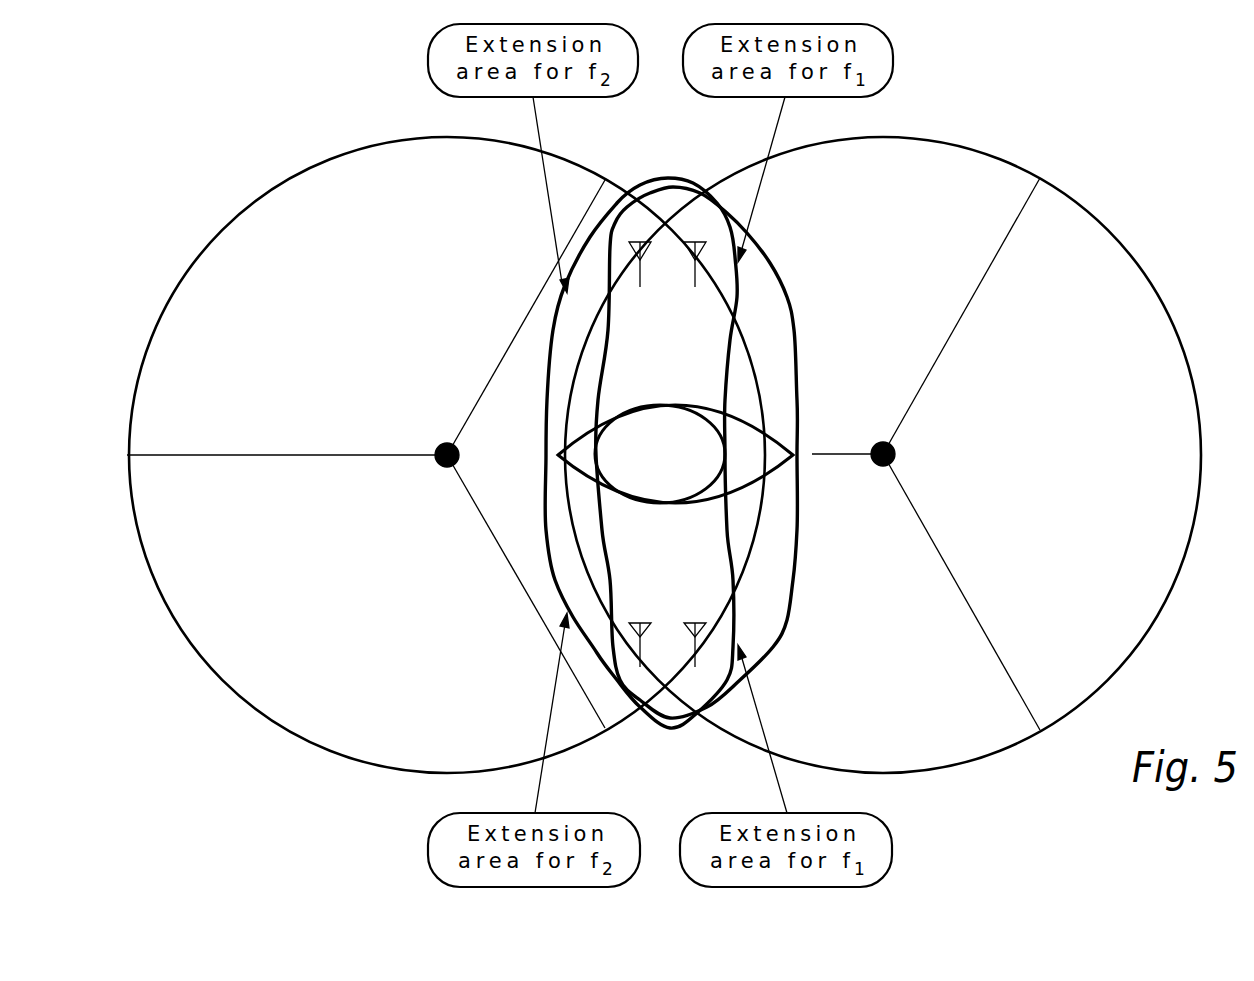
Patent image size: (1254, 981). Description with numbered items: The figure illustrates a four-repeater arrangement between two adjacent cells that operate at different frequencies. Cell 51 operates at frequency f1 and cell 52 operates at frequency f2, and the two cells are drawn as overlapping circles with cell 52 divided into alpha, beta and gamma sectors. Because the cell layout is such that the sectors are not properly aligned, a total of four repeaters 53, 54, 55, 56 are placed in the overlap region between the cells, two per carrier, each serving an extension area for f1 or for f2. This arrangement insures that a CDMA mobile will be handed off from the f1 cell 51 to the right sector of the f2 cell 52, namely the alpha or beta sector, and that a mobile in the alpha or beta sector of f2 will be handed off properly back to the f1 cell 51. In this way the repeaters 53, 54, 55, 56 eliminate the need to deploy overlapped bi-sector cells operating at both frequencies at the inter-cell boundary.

The cell 51 is at (240, 202).
The cell 52 is at (1086, 195).
The repeater 53 is at (645, 218).
The repeater 54 is at (687, 218).
The repeater 55 is at (657, 670).
The repeater 56 is at (678, 670).